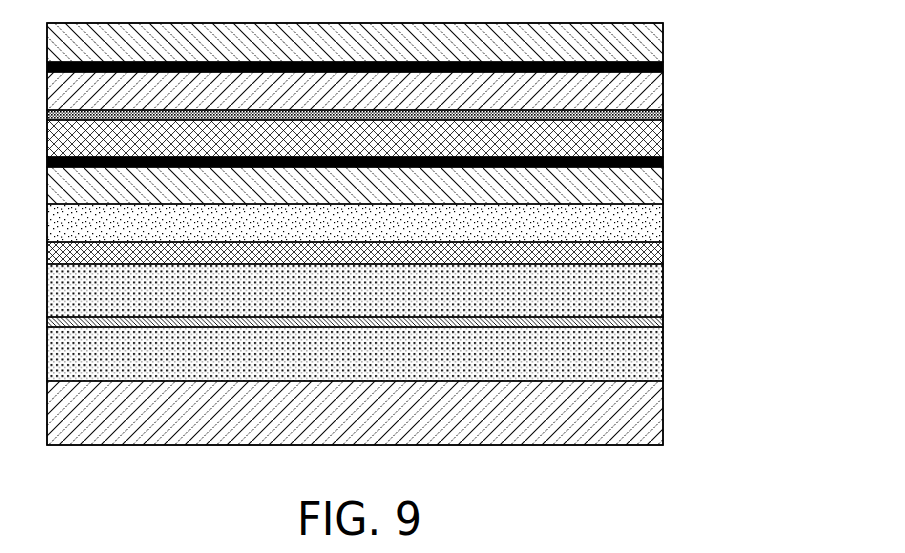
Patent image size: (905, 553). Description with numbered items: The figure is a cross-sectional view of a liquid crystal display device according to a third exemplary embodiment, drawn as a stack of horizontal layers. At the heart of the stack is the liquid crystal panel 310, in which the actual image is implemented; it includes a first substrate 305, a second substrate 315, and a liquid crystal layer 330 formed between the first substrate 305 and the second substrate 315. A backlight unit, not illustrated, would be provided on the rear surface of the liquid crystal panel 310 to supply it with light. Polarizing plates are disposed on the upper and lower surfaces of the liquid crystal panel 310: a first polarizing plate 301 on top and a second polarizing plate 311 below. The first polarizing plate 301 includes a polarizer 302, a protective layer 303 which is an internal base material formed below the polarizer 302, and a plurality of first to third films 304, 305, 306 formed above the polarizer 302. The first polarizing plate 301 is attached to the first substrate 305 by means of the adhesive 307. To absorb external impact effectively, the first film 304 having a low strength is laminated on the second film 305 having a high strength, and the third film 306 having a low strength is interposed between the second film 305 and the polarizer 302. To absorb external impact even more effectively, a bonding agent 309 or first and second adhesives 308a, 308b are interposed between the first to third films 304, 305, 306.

The first polarizing plate 301 is at (755, 33).
The polarizer 302 is at (661, 185).
The protective layer 303 is at (661, 224).
The first film 304 is at (661, 41).
The second film 305 is at (661, 91).
The third film 306 is at (661, 141).
The adhesive 307 is at (661, 252).
The first adhesive 308a is at (661, 68).
The second adhesive 308b is at (661, 162).
The bonding agent 309 is at (661, 115).
The liquid crystal panel 310 is at (743, 280).
The second polarizing plate 311 is at (661, 411).
The second substrate 315 is at (661, 354).
The liquid crystal layer 330 is at (661, 321).